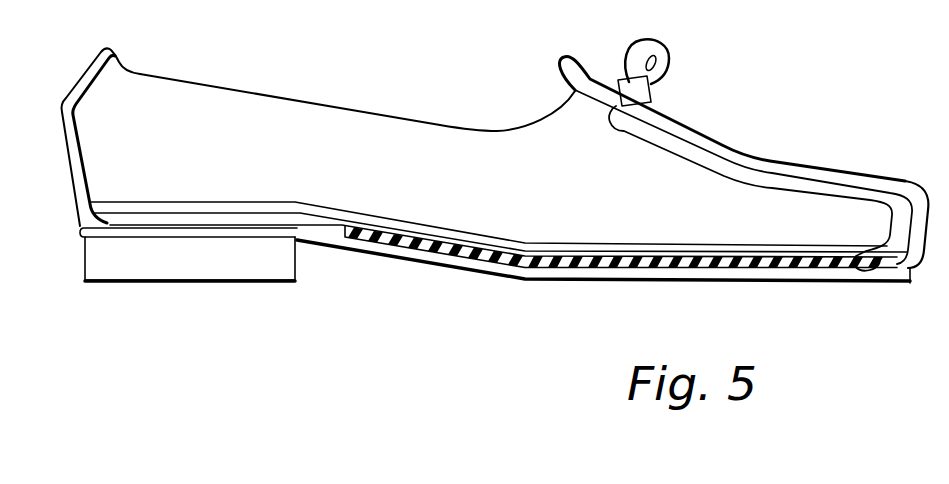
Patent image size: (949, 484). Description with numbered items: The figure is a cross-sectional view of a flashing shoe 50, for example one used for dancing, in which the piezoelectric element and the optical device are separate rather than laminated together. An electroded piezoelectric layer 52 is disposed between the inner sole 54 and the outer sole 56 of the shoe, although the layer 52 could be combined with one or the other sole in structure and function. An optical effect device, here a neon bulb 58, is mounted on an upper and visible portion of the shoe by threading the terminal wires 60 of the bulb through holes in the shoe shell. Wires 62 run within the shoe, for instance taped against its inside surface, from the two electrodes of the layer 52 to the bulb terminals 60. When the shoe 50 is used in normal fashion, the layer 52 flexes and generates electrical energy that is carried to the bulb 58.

The flashing shoe 50 is at (425, 52).
The electroded piezoelectric layer 52 is at (533, 260).
The inner sole 54 is at (447, 236).
The outer sole 56 is at (378, 245).
The neon bulb 58 is at (672, 70).
The terminal wires 60 is at (700, 148).
The wires 62 is at (700, 164).